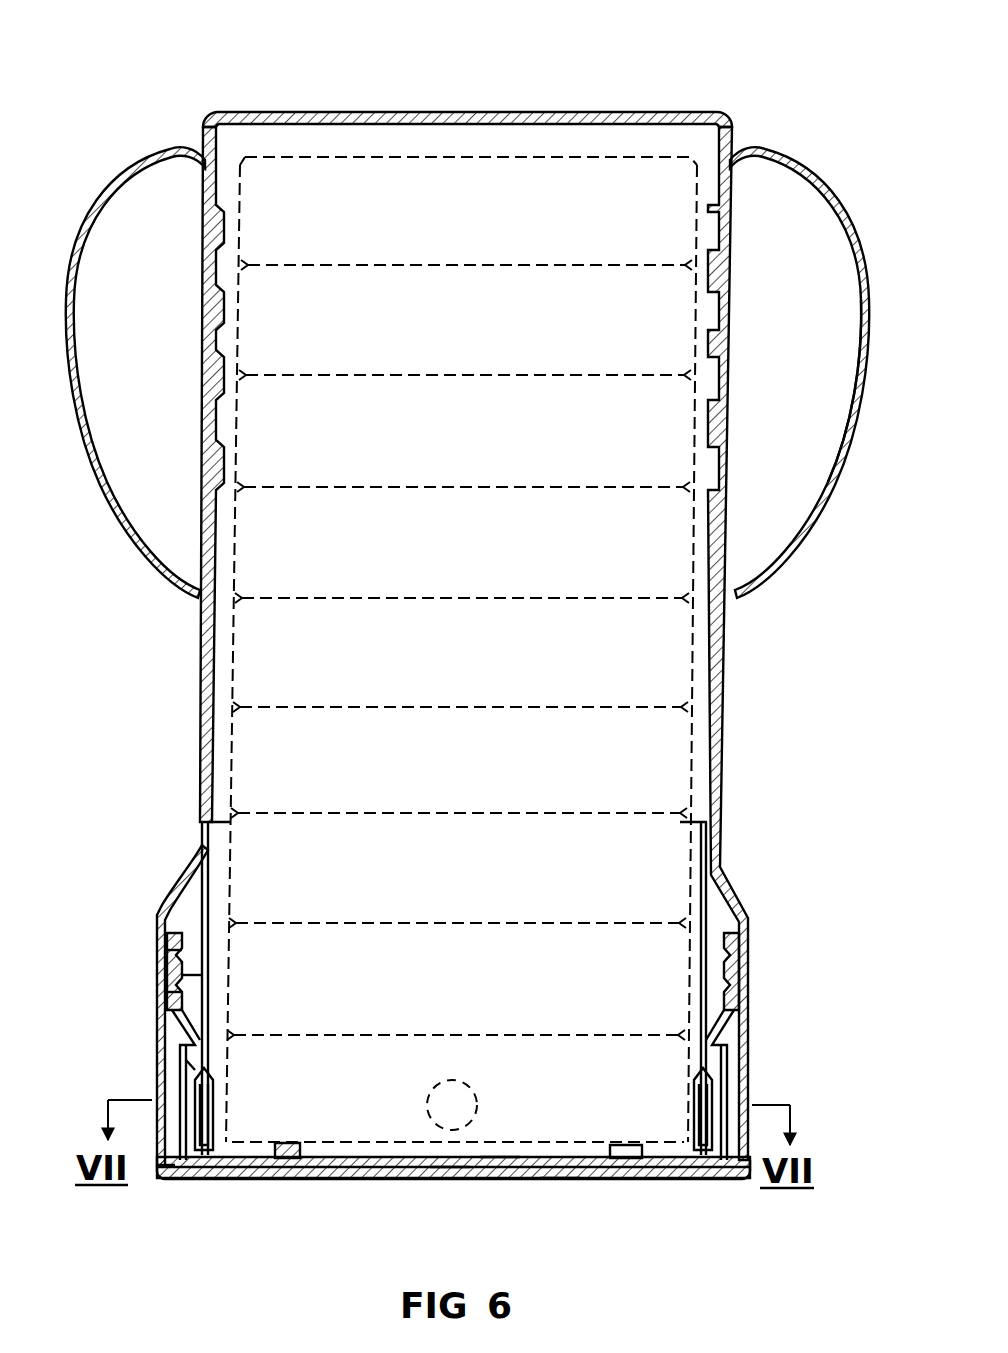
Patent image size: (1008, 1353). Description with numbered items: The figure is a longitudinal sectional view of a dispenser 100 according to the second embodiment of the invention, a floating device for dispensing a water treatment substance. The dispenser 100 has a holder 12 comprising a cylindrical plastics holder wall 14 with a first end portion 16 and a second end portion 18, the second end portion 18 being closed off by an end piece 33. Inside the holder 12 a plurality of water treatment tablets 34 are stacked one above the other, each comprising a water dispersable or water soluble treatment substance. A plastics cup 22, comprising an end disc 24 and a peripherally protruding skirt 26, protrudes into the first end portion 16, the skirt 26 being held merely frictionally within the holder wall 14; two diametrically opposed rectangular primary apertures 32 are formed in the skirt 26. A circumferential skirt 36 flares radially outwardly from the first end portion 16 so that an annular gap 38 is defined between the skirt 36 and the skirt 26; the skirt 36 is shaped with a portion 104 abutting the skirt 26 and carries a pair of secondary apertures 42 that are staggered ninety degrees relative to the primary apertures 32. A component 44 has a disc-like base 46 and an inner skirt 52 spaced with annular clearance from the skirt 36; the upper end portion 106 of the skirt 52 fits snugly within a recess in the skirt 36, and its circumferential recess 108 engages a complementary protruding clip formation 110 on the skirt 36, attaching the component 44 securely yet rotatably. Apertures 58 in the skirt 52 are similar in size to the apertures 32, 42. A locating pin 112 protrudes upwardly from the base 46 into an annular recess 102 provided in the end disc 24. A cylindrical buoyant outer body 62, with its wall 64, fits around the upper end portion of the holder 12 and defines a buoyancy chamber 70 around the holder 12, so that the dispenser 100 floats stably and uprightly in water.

The dispenser 100 is at (815, 75).
The end piece 33 is at (549, 118).
The outer body 62 is at (884, 212).
The wall 64 is at (868, 313).
The buoyancy chamber 70 is at (822, 392).
The second end portion 18 is at (250, 147).
The water treatment tablets 34 is at (489, 997).
The holder wall 14 is at (198, 730).
The holder 12 is at (742, 762).
The first end portion 16 is at (200, 852).
The skirt 26 is at (712, 928).
The circumferential skirt 36 is at (160, 940).
The upper end portion 106 is at (170, 965).
The circumferential recess 108 is at (166, 986).
The clip formation 110 is at (200, 987).
The skirt 52 is at (168, 1052).
The portion 104 is at (192, 1060).
The primary apertures 32 is at (228, 1100).
The secondary apertures 42 is at (485, 1085).
The locating pin 112 is at (292, 1150).
The apertures 58 is at (757, 1097).
The annular gap 38 is at (190, 1182).
The plastics cup 22 is at (412, 1172).
The component 44 is at (450, 1177).
The end disc 24 is at (497, 1173).
The base 46 is at (556, 1173).
The annular recess 102 is at (627, 1177).